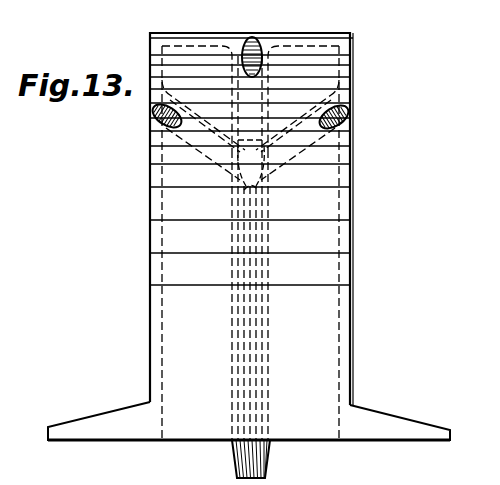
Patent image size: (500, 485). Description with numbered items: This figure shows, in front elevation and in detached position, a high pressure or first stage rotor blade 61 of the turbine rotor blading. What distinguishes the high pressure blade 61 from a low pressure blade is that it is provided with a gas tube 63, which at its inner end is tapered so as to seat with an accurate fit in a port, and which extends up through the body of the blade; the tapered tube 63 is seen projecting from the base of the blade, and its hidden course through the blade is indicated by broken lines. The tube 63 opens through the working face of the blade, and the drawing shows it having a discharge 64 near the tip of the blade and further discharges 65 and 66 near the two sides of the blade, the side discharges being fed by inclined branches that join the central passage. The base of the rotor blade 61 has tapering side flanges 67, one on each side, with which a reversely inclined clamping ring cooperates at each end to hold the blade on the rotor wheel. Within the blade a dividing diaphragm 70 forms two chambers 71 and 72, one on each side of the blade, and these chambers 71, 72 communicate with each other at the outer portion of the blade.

The high pressure rotor blade 61 is at (271, 219).
The gas tube 63 is at (262, 452).
The discharge near the tip of the blade 64 is at (263, 56).
The discharge near the side of the blade 65 is at (156, 112).
The discharge near the side of the blade 66 is at (347, 122).
The tapering side flange 67 is at (88, 421).
The dividing diaphragm 70 is at (254, 193).
The chamber 71 is at (188, 243).
The chamber 72 is at (339, 331).